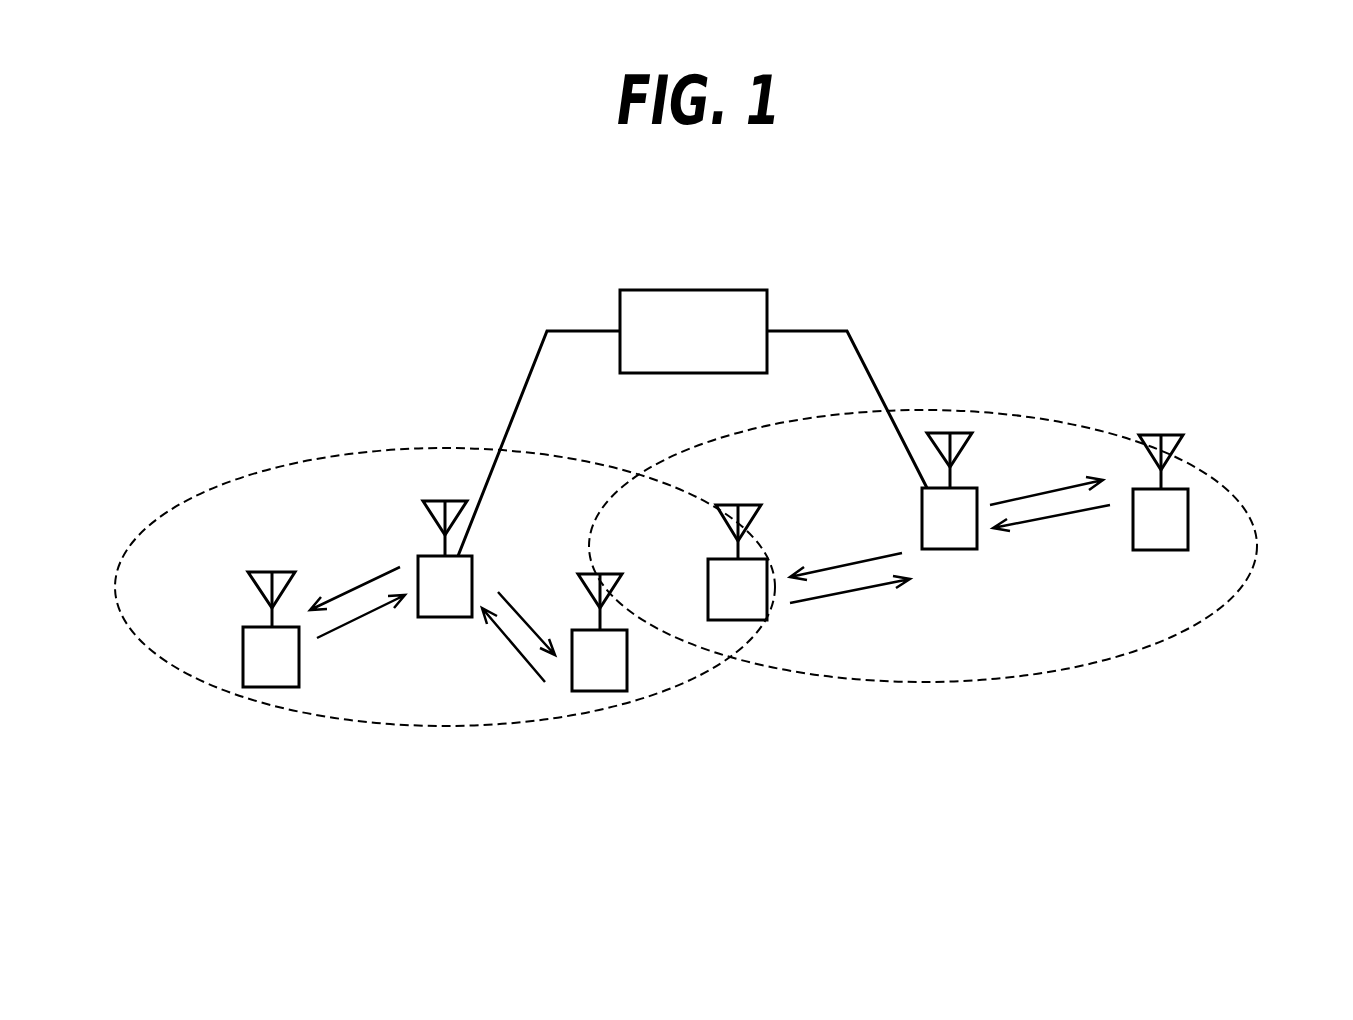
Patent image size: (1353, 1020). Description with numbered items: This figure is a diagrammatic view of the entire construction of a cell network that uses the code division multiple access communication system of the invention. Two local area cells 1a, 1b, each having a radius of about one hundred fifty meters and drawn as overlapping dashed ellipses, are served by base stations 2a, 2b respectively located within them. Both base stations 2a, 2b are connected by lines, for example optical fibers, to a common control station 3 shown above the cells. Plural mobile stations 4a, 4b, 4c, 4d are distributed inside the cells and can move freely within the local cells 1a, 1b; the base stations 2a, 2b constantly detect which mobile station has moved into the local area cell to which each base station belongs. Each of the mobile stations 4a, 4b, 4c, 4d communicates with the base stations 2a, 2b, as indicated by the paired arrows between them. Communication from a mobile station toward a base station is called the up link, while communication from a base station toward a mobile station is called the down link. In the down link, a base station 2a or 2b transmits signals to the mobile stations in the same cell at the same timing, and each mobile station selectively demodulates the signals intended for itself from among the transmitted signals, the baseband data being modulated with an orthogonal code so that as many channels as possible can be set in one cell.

The local area cell 1a is at (163, 513).
The local area cell 1b is at (1033, 420).
The base station 2a is at (435, 617).
The base station 2b is at (958, 549).
The control station 3 is at (730, 290).
The mobile station 4a is at (243, 653).
The mobile station 4b is at (627, 662).
The mobile station 4c is at (737, 620).
The mobile station 4d is at (1188, 532).